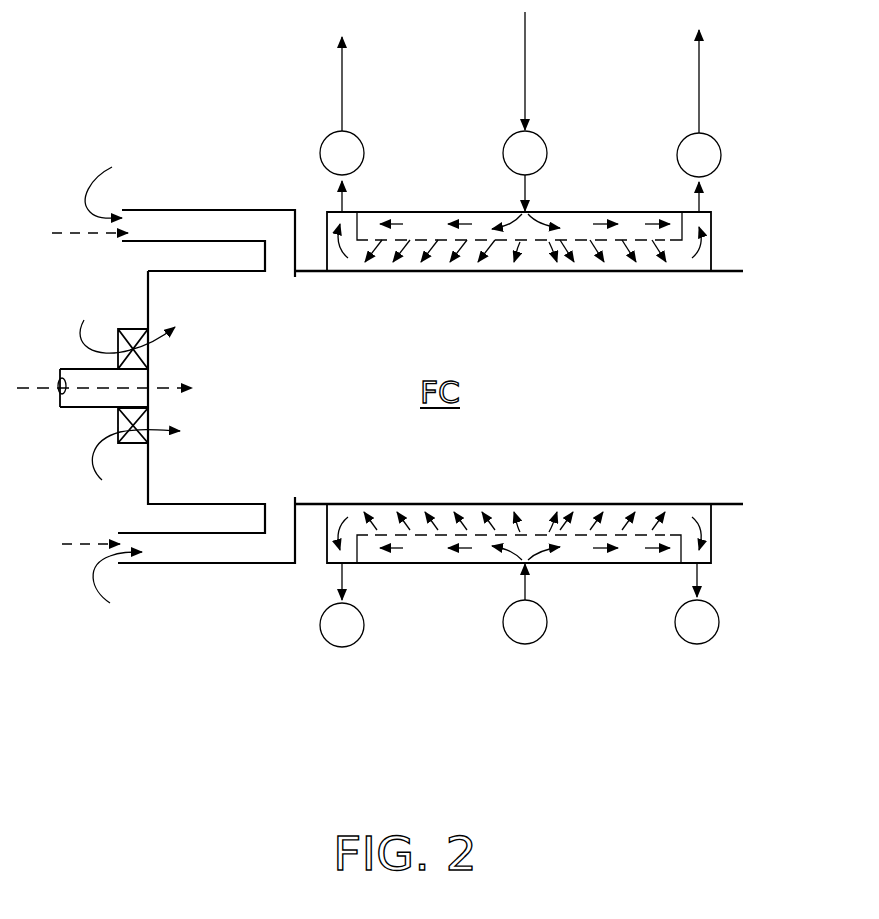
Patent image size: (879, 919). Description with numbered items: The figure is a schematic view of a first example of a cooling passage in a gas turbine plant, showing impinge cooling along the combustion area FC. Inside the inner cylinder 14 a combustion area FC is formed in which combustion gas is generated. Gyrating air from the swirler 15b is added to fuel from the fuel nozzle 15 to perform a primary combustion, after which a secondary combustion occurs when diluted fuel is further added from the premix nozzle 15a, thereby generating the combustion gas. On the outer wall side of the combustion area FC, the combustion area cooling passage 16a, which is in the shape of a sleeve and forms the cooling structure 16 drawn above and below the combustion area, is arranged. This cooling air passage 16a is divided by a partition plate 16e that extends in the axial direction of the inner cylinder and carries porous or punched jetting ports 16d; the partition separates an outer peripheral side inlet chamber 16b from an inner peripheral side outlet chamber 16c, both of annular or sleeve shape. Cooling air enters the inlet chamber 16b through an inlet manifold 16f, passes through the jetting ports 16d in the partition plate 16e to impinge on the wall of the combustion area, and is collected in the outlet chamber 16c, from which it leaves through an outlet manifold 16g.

The inner cylinder 14 is at (218, 505).
The fuel nozzle 15 is at (75, 407).
The premix nozzle 15a is at (152, 210).
The swirler 15b is at (127, 329).
The air distribution unit 16 is at (608, 200).
The combustion area cooling passage 16a is at (413, 212).
The inlet chamber 16b is at (545, 212).
The outlet chamber 16c is at (371, 212).
The jetting ports 16d is at (538, 242).
The partition plate 16e is at (612, 242).
The inlet manifold 16f is at (538, 133).
The outlet manifold 16g is at (352, 132).